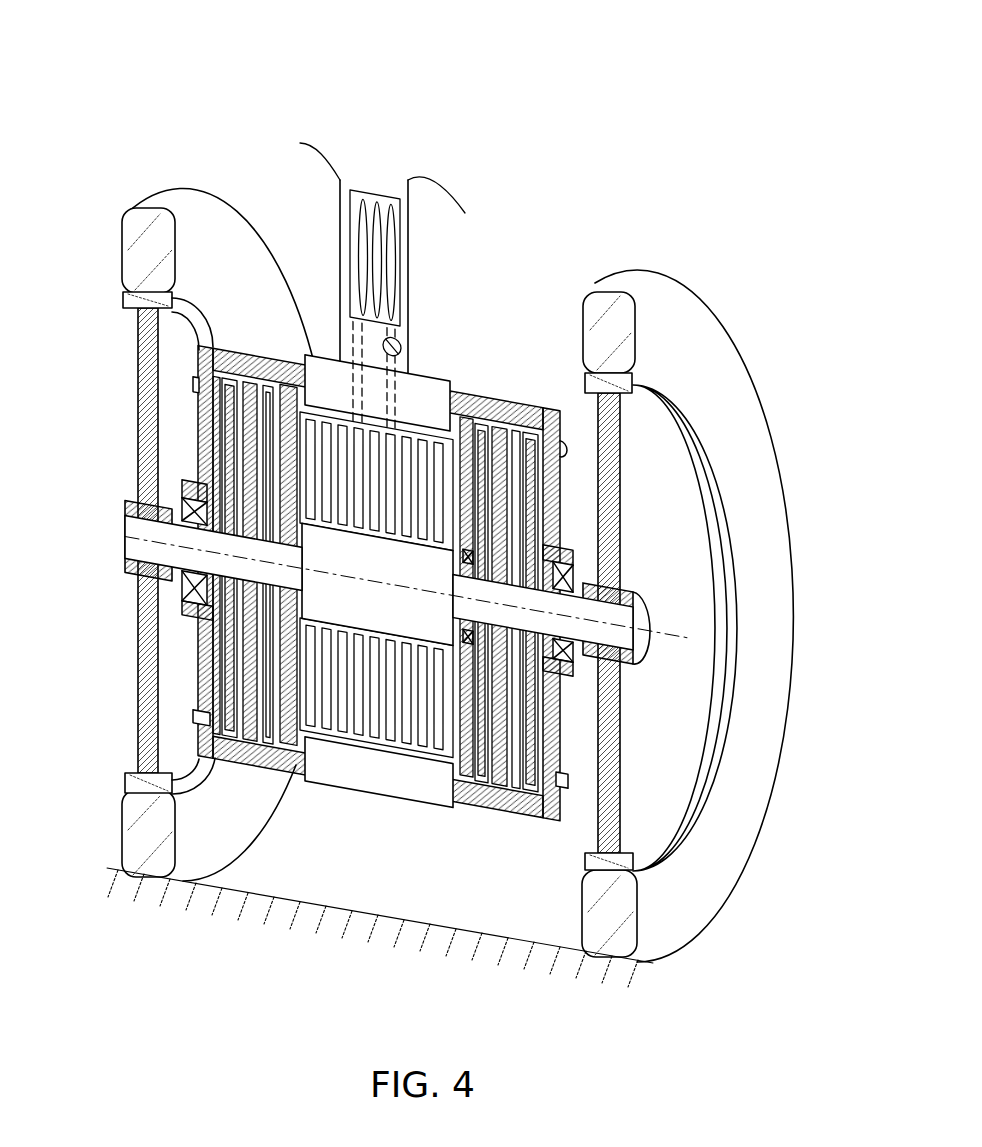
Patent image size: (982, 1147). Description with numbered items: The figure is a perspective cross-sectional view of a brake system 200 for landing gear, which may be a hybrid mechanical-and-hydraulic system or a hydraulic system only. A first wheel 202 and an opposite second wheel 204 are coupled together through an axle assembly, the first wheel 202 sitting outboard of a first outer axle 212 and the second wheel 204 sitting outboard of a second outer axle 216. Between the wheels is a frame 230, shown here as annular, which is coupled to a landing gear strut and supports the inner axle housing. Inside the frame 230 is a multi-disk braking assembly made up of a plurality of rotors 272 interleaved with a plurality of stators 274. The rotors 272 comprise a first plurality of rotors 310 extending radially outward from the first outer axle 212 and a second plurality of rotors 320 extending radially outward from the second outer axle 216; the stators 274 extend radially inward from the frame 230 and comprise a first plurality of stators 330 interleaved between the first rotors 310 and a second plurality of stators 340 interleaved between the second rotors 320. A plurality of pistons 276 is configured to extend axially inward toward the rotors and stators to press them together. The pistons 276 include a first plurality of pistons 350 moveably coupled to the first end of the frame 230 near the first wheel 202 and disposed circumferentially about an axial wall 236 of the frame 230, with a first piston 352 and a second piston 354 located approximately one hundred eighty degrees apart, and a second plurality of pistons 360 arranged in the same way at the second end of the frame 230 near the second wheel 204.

The brake system 200 is at (436, 507).
The first wheel 202 is at (150, 470).
The second wheel 204 is at (697, 575).
The first outer axle 212 is at (158, 533).
The second outer axle 216 is at (605, 620).
The frame 230 is at (540, 505).
The axial wall 236 is at (174, 496).
The plurality of rotors 272 is at (222, 427).
The plurality of stators 274 is at (213, 473).
The plurality of pistons 276 is at (563, 437).
The first plurality of rotors 310 is at (230, 657).
The second plurality of rotors 320 is at (533, 510).
The first plurality of stators 330 is at (218, 705).
The second plurality of stators 340 is at (547, 703).
The first plurality of pistons 350 is at (114, 719).
The first piston 352 is at (193, 383).
The second piston 354 is at (208, 713).
The second plurality of pistons 360 is at (567, 780).